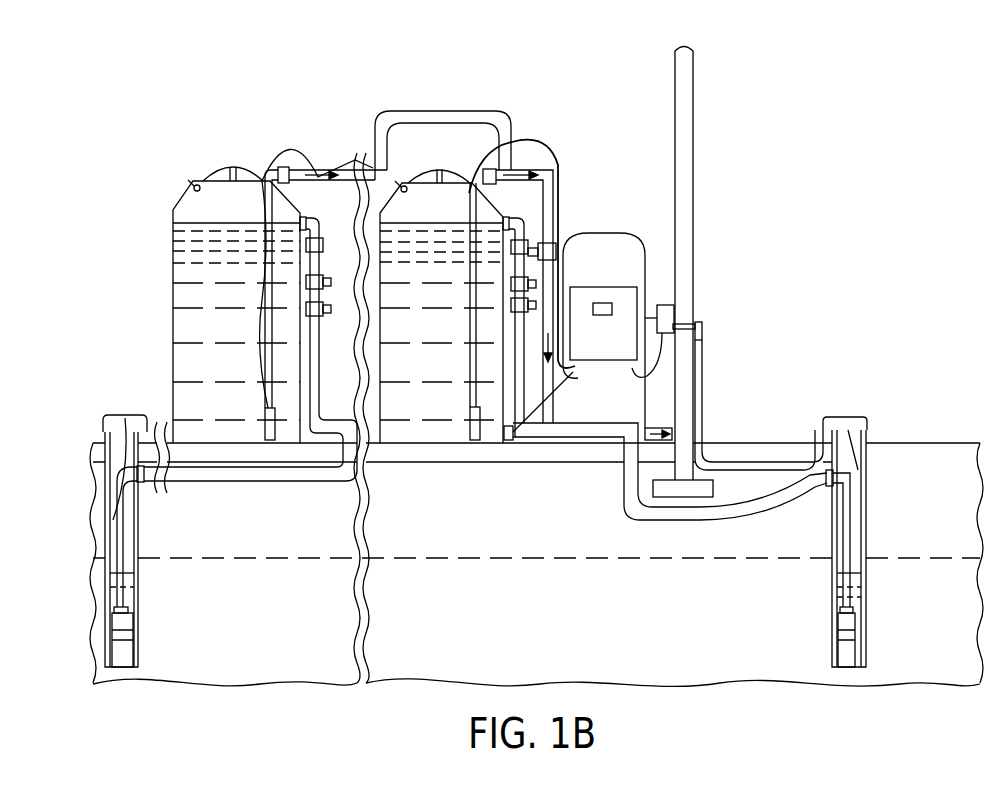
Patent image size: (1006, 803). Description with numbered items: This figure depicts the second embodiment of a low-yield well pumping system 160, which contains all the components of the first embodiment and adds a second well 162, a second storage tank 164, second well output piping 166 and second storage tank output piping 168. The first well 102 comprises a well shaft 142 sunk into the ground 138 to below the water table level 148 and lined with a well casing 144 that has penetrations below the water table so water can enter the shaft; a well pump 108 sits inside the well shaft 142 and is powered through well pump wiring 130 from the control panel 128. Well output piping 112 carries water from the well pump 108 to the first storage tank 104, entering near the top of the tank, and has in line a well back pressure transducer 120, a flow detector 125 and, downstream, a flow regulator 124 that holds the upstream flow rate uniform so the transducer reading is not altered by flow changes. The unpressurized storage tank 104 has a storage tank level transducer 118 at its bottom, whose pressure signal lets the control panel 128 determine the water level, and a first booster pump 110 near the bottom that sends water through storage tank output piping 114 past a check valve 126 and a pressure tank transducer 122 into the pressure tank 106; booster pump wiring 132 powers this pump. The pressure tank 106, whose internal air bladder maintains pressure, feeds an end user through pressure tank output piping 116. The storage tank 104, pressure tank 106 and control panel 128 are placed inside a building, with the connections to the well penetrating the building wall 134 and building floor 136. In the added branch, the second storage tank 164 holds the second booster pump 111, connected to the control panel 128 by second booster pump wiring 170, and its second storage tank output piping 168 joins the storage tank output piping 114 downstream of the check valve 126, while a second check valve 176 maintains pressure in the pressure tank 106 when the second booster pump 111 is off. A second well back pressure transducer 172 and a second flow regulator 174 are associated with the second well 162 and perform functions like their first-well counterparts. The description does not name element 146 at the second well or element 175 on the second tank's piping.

The low-yield well pumping system 160 is at (212, 83).
The second storage tank 164 is at (195, 186).
The storage tank 104 is at (430, 337).
The second booster pump wiring 170 is at (278, 169).
The second storage tank output piping 168 is at (313, 170).
The second check valve 176 is at (284, 182).
The second booster pump 111 is at (266, 420).
The booster pump wiring 132 is at (492, 160).
The check valve 126 is at (478, 172).
The flow regulator 124 is at (550, 215).
The pressure tank transducer 122 is at (556, 248).
The storage tank output piping 114 is at (503, 161).
The first booster pump 110 is at (471, 421).
The well back pressure transducer 120 is at (511, 284).
The flow detector 125 is at (511, 305).
The second well back pressure transducer 172 is at (306, 282).
The second flow regulator 174 is at (306, 246).
The tee fitting 175 is at (306, 309).
The second well output piping 166 is at (302, 483).
The second well 162 is at (118, 419).
The storage tank level transducer 118 is at (505, 438).
The well output piping 112 is at (624, 488).
The pressure tank 106 is at (617, 234).
The control panel 128 is at (614, 310).
The pressure tank output piping 116 is at (652, 432).
The building wall 134 is at (688, 91).
The well pump wiring 130 is at (747, 461).
The well 102 is at (849, 416).
The ground 138 is at (905, 443).
The building floor 136 is at (524, 457).
The water table level 148 is at (487, 560).
The well shaft 142 is at (840, 506).
The static water level 146 is at (862, 568).
The well casing 144 is at (830, 604).
The well pump 108 is at (843, 632).